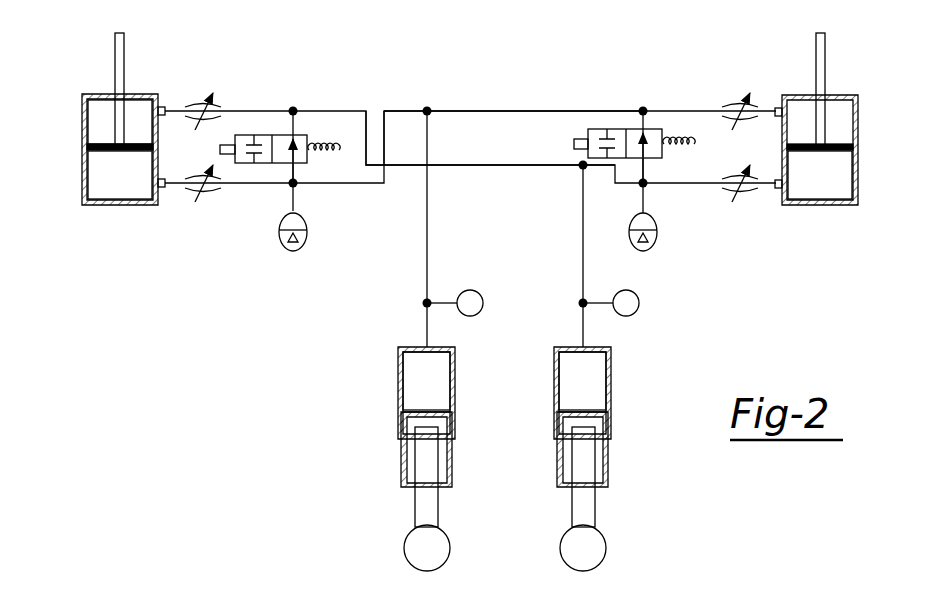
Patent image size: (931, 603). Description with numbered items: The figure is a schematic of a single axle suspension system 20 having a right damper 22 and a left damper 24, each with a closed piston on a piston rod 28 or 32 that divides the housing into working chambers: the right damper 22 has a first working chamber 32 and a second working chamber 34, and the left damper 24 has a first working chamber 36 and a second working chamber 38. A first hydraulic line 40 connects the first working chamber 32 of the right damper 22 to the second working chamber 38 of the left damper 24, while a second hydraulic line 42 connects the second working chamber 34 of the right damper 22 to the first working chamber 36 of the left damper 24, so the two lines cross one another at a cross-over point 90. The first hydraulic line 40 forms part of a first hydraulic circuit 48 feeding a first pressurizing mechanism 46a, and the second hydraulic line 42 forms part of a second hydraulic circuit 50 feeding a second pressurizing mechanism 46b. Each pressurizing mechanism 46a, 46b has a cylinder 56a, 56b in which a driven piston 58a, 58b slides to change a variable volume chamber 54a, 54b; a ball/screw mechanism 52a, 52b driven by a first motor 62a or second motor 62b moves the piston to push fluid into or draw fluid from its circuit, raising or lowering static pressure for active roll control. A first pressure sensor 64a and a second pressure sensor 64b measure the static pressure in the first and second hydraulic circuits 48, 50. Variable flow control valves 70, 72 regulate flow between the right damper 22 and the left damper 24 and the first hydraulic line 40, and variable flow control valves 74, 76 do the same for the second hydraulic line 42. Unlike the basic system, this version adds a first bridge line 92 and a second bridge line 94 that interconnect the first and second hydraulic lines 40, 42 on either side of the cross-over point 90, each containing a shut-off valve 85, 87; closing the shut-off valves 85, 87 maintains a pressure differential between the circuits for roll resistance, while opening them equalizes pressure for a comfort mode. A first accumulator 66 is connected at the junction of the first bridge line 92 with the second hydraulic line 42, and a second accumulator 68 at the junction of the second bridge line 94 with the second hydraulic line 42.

The single axle suspension system 20 is at (238, 394).
The right damper 22 is at (852, 136).
The left damper 24 is at (87, 133).
The piston rod 28 is at (118, 45).
The first working chamber 32 is at (800, 100).
The second working chamber 34 is at (836, 186).
The first working chamber 36 is at (138, 100).
The second working chamber 38 is at (103, 190).
The first hydraulic line 40 is at (571, 110).
The second hydraulic line 42 is at (548, 167).
The first pressurizing mechanism 46a is at (415, 341).
The second pressurizing mechanism 46b is at (599, 368).
The first hydraulic circuit 48 is at (535, 108).
The second hydraulic circuit 50 is at (512, 170).
The ball/screw mechanism 52a is at (430, 497).
The ball/screw mechanism 52b is at (585, 497).
The variable volume chamber 54a is at (415, 384).
The variable volume chamber 54b is at (595, 384).
The cylinder 56a is at (398, 358).
The cylinder 56b is at (612, 358).
The driven piston 58a is at (401, 453).
The driven piston 58b is at (609, 453).
The first motor 62a is at (412, 535).
The second motor 62b is at (603, 535).
The first pressure sensor 64a is at (497, 326).
The second pressure sensor 64b is at (634, 314).
The first accumulator 66 is at (303, 246).
The second accumulator 68 is at (655, 240).
The first variable flow control valve 70 is at (740, 100).
The second variable flow control valve 72 is at (207, 193).
The third variable flow control valve 74 is at (746, 194).
The fourth variable flow control valve 76 is at (196, 102).
The first shut-off valve 85 is at (588, 135).
The second shut-off valve 87 is at (298, 136).
The cross-over point 90 is at (386, 170).
The first bridge line 92 is at (648, 166).
The second bridge line 94 is at (295, 168).